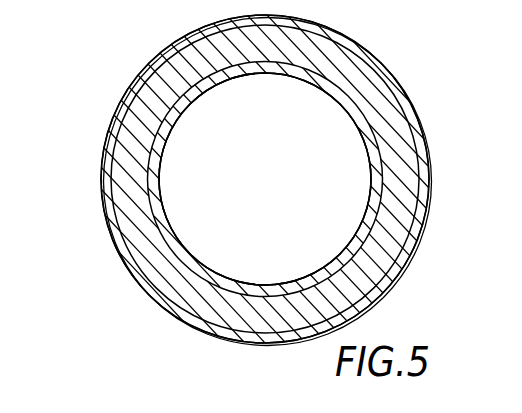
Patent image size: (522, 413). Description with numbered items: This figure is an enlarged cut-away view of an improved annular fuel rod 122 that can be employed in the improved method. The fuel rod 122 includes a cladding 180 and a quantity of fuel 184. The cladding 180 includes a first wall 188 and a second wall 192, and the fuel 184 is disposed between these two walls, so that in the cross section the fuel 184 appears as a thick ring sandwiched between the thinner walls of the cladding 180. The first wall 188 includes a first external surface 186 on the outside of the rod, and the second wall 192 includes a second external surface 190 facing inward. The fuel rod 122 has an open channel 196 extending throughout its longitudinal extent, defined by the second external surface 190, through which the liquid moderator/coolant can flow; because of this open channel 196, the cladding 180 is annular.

The annular fuel rod 122 is at (122, 77).
The cladding 180 is at (364, 27).
The fuel 184 is at (370, 65).
The first external surface 186 is at (412, 264).
The first wall 188 is at (415, 114).
The second external surface 190 is at (249, 76).
The second wall 192 is at (345, 113).
The open channel 196 is at (274, 210).